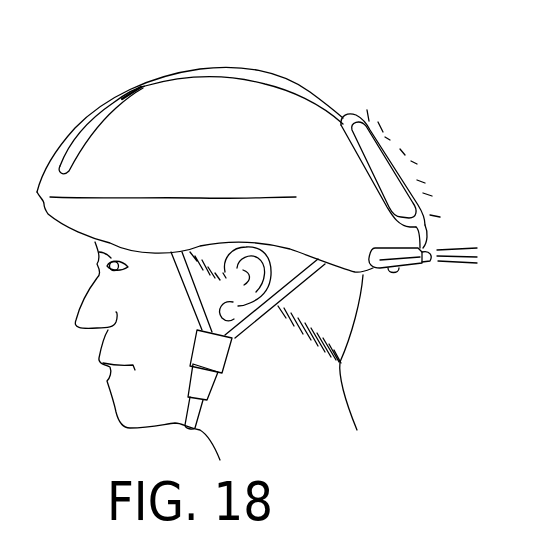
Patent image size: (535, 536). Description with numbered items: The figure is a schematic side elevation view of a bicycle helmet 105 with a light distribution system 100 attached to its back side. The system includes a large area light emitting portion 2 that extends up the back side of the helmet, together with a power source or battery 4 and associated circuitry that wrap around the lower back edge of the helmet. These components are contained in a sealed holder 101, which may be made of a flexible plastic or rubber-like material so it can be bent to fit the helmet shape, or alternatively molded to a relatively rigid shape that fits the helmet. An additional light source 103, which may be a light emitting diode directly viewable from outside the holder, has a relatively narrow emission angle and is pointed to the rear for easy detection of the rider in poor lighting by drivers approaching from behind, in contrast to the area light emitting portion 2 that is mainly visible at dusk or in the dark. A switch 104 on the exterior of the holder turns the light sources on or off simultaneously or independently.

The bicycle helmet 105 is at (197, 92).
The light emitting portion 2 is at (382, 131).
The holder 101 is at (358, 167).
The light distribution system 100 is at (429, 181).
The power source 4 is at (371, 246).
The additional light source 103 is at (431, 262).
The switch 104 is at (393, 273).